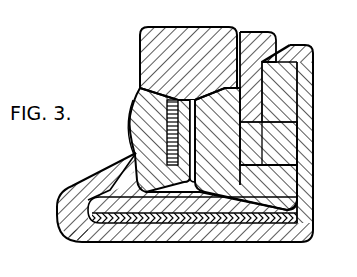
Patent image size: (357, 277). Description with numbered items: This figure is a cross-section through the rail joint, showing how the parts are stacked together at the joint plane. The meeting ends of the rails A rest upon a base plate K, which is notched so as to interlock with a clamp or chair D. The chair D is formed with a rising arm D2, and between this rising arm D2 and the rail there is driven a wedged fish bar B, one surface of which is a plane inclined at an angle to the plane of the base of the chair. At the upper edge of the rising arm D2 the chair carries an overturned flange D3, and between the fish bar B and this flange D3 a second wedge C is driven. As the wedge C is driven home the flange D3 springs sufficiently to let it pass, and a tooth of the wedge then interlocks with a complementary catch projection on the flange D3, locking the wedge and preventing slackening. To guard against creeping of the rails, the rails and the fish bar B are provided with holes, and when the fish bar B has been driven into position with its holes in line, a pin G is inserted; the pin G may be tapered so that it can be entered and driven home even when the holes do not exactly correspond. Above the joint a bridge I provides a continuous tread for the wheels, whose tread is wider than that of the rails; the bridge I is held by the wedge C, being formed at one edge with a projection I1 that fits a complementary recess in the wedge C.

The meeting ends of the rails A is at (188, 63).
The wedged fish bar B is at (213, 149).
The second wedge C is at (268, 143).
The clamp or chair D is at (185, 143).
The rising arm D2 is at (306, 134).
The overturned flange D3 is at (298, 47).
The pin G is at (131, 137).
The bridge I is at (258, 108).
The projection I1 is at (266, 108).
The base plate K is at (180, 240).